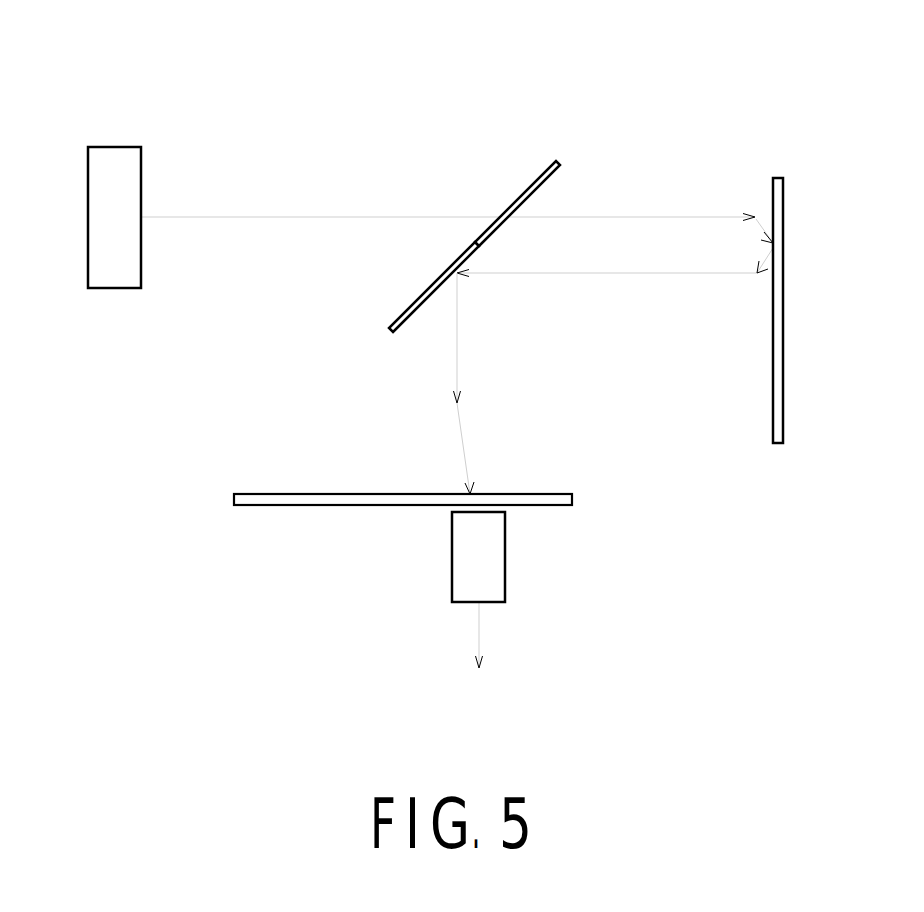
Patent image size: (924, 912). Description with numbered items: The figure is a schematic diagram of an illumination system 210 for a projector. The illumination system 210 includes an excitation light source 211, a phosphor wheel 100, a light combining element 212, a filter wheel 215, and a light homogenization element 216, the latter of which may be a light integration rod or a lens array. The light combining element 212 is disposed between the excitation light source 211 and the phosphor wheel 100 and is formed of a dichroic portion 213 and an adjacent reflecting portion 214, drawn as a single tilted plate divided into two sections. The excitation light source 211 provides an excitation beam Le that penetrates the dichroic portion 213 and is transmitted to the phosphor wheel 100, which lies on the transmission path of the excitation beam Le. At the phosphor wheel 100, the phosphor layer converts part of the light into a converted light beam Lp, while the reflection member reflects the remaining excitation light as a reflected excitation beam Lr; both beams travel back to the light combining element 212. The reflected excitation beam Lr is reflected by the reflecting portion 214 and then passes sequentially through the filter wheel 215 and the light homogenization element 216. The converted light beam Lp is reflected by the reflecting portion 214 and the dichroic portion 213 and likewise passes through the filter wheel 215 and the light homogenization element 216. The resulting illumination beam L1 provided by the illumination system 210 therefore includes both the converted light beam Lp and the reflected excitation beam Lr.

The phosphor wheel 100 is at (777, 337).
The illumination system 210 is at (503, 343).
The excitation light source 211 is at (113, 162).
The light combining element 212 is at (474, 168).
The dichroic portion 213 is at (530, 188).
The reflecting portion 214 is at (436, 280).
The filter wheel 215 is at (308, 505).
The light homogenization element 216 is at (490, 558).
The excitation beam Le is at (290, 217).
The converted light beam Lp is at (612, 273).
The excitation beam reflected by the reflection member Lr is at (572, 383).
The illumination beam L1 is at (480, 630).